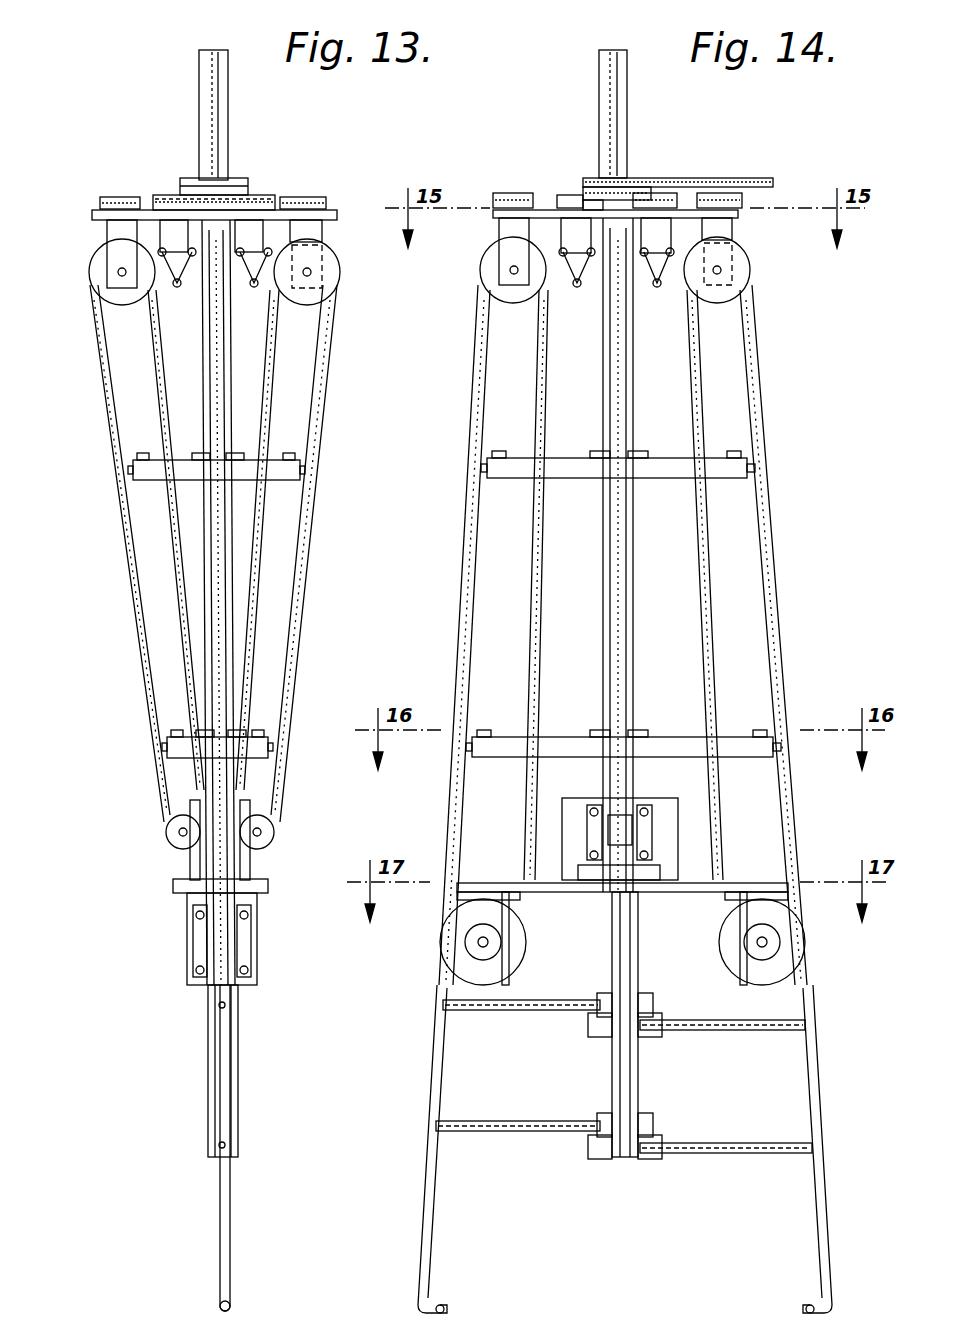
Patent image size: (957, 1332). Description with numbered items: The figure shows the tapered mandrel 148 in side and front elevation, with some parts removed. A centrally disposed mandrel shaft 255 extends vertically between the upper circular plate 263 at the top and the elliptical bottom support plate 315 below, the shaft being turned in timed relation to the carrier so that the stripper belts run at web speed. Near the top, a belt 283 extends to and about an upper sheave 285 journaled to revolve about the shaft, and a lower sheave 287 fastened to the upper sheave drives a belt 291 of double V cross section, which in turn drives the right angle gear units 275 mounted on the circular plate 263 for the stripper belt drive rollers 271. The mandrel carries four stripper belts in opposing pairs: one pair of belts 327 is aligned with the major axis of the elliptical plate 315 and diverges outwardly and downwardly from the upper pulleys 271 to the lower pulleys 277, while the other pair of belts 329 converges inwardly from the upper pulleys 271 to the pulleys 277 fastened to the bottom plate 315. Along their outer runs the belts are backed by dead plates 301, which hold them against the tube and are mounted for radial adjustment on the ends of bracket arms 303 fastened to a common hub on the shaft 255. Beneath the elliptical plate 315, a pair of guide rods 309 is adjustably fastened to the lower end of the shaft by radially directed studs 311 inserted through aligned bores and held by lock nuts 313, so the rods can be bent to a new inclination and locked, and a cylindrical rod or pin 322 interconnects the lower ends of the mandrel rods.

In FIG. 13, the tapered mandrel 148 is at (335, 552).
In FIG. 14, the tapered mandrel 148 is at (795, 582).
In FIG. 13, the mandrel shaft 255 is at (208, 50).
In FIG. 14, the mandrel shaft 255 is at (614, 50).
In FIG. 13, the upper circular plate 263 is at (92, 215).
In FIG. 14, the upper circular plate 263 is at (494, 210).
In FIG. 13, the stripper belt drive roller 271 is at (200, 290).
In FIG. 14, the stripper belt drive roller 271 is at (490, 270).
In FIG. 13, the right angle gear unit 275 is at (170, 234).
In FIG. 14, the right angle gear unit 275 is at (568, 229).
In FIG. 13, the lower pulley 277 is at (165, 830).
In FIG. 14, the lower pulley 277 is at (630, 819).
In FIG. 13, the belt 283 is at (255, 188).
In FIG. 14, the belt 283 is at (774, 182).
In FIG. 13, the upper sheave 285 is at (185, 178).
In FIG. 14, the upper sheave 285 is at (641, 178).
In FIG. 14, the lower sheave 287 is at (592, 190).
In FIG. 13, the double V belt 291 is at (330, 168).
In FIG. 14, the double V belt 291 is at (572, 162).
In FIG. 13, the dead plate 301 is at (208, 364).
In FIG. 14, the dead plate 301 is at (615, 588).
In FIG. 13, the bracket arm 303 is at (150, 480).
In FIG. 14, the bracket arm 303 is at (566, 465).
In FIG. 13, the guide rod 309 is at (220, 1200).
In FIG. 14, the guide rod 309 is at (427, 1175).
In FIG. 13, the stud 311 is at (215, 1005).
In FIG. 14, the stud 311 is at (472, 1012).
In FIG. 14, the lock nut 313 is at (644, 1000).
In FIG. 13, the bottom support plate 315 is at (262, 893).
In FIG. 14, the bottom support plate 315 is at (566, 893).
In FIG. 13, the cylindrical rod or pin 322 is at (232, 1307).
In FIG. 14, the cylindrical rod or pin 322 is at (443, 1308).
In FIG. 13, the stripper belt 327 is at (218, 558).
In FIG. 14, the stripper belt 327 is at (472, 443).
In FIG. 13, the stripper belt 329 is at (106, 425).
In FIG. 14, the stripper belt 329 is at (620, 364).